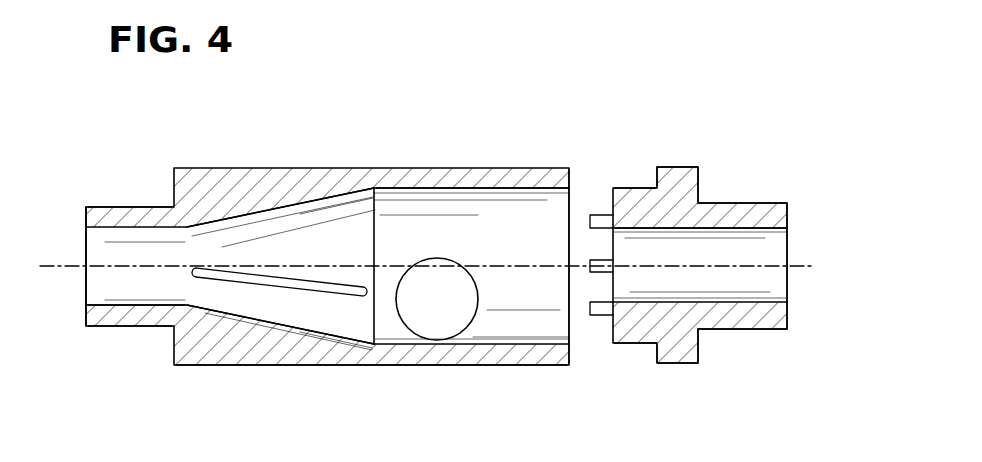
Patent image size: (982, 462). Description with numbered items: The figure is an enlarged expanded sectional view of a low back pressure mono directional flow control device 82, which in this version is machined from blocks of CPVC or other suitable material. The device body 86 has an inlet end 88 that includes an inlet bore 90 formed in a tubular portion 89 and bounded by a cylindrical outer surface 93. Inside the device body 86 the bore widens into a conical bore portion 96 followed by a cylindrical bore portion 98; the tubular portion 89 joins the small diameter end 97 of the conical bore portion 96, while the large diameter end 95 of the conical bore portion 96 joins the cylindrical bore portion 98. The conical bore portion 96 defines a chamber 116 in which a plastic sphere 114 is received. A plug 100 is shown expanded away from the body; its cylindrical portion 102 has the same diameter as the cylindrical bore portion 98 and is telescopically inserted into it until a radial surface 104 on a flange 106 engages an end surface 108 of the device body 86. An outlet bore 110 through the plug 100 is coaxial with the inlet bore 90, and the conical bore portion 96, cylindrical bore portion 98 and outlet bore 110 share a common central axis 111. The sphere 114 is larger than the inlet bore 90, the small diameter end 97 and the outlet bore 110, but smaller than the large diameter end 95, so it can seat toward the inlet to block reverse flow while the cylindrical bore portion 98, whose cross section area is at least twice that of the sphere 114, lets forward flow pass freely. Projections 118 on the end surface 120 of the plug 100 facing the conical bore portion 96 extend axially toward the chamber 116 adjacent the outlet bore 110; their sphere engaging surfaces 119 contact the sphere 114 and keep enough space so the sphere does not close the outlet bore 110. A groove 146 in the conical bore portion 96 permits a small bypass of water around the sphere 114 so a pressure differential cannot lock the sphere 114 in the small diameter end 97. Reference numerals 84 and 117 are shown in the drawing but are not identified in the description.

The directional flow control device 82 is at (286, 145).
The retainer / end fitting 84 is at (788, 317).
The device body 86 is at (247, 366).
The inlet end 88 is at (85, 219).
The tubular portion 89 is at (143, 327).
The inlet bore 90 is at (102, 300).
The cylindrical outer surface 93 is at (132, 207).
The large diameter end 95 is at (380, 226).
The conical bore portion 96 is at (276, 324).
The small diameter end 97 is at (187, 242).
The cylindrical bore portion 98 is at (530, 200).
The plug 100 is at (760, 330).
The cylindrical portion 102 is at (630, 188).
The radial surface 104 is at (657, 180).
The flange 106 is at (667, 364).
The end surface 108 is at (568, 355).
The outlet bore 110 is at (775, 229).
The central axis 111 is at (78, 262).
The sphere 114 is at (460, 336).
The chamber 116 is at (348, 213).
The lower passage surface 117 is at (357, 343).
The projections 118 is at (612, 343).
The sphere engaging surfaces 119 is at (585, 314).
The end surface 120 is at (612, 203).
The groove 146 is at (192, 273).